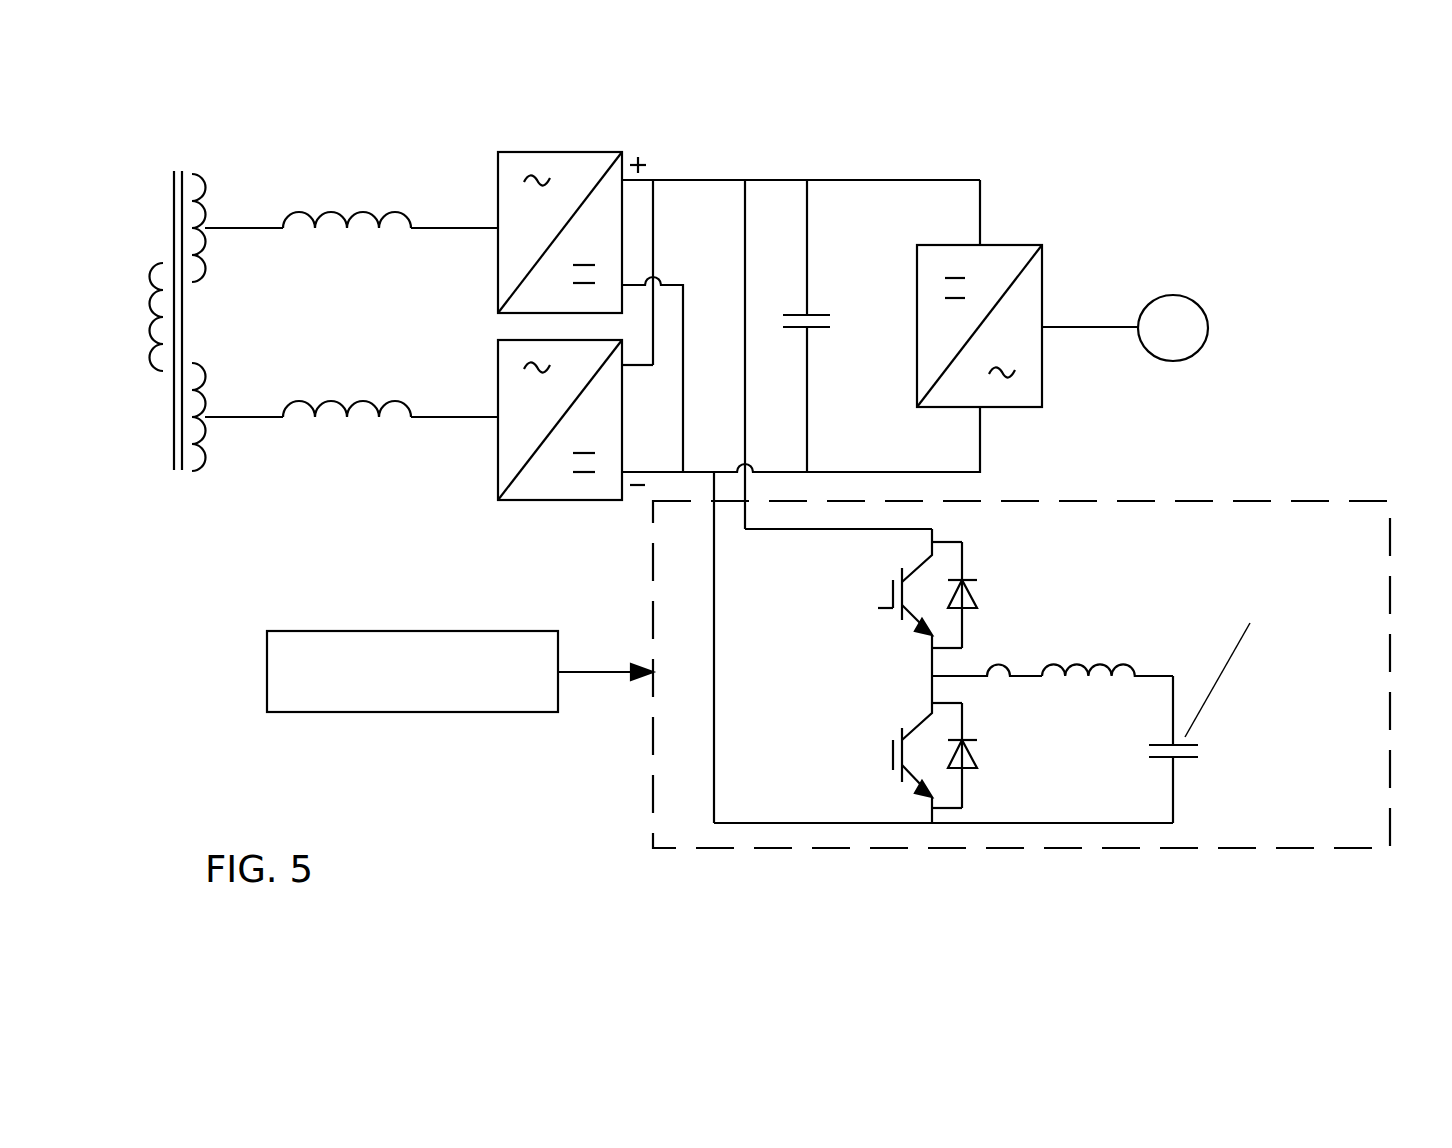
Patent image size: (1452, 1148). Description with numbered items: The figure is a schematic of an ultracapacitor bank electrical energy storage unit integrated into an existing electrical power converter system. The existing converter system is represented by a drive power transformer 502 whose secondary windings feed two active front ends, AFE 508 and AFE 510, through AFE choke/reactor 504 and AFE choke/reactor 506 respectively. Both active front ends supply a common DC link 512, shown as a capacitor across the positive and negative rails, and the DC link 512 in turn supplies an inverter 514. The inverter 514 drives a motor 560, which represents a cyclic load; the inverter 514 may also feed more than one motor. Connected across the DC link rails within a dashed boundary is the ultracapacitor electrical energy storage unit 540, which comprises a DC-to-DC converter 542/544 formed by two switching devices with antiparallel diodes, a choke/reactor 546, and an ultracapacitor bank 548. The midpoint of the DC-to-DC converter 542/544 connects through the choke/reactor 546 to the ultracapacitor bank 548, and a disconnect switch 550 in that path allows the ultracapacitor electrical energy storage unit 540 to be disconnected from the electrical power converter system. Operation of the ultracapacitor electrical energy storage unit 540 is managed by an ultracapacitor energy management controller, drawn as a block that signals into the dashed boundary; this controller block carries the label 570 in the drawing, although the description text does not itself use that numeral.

The drive power transformer 502 is at (178, 301).
The AFE choke/reactor 504 is at (351, 203).
The AFE choke/reactor 506 is at (351, 396).
The AFE 508 is at (560, 213).
The AFE 510 is at (560, 438).
The DC link 512 is at (832, 326).
The inverter 514 is at (987, 310).
The ultracapacitor electrical energy storage unit 540 is at (993, 660).
The DC-to-DC converter 542 is at (897, 602).
The DC-to-DC converter 544 is at (898, 749).
The choke/reactor 546 is at (1107, 652).
The ultracapacitor bank 548 is at (1243, 696).
The disconnect switch 550 is at (997, 687).
The motor 560 is at (1125, 346).
The ultracapacitor energy management controller 570 is at (460, 691).